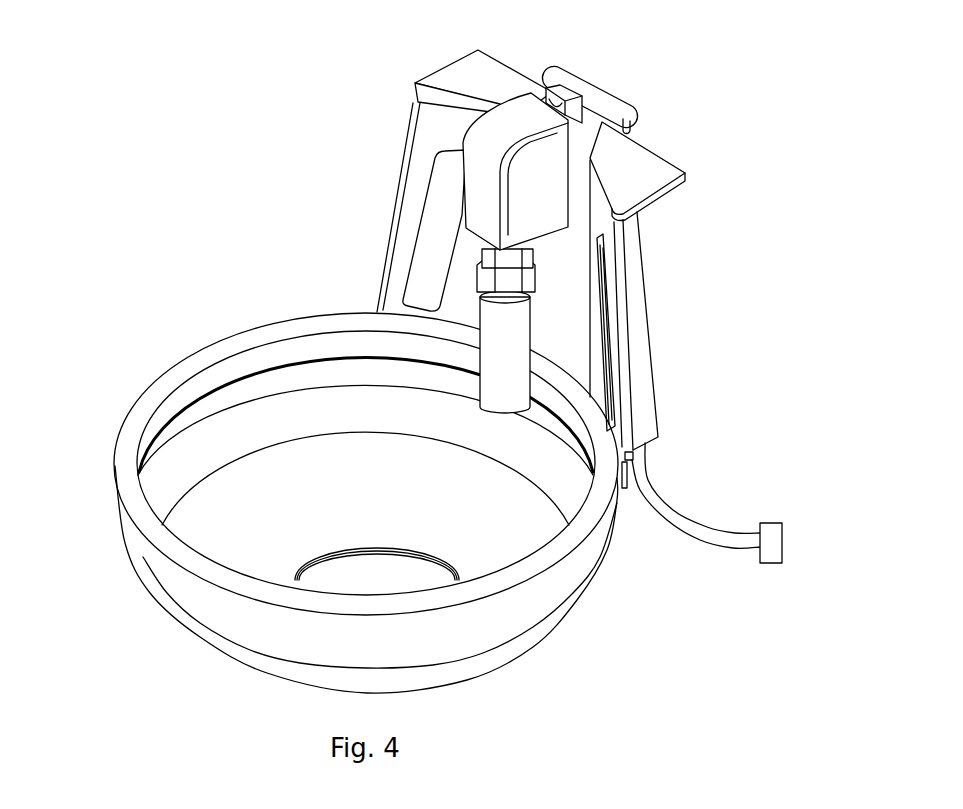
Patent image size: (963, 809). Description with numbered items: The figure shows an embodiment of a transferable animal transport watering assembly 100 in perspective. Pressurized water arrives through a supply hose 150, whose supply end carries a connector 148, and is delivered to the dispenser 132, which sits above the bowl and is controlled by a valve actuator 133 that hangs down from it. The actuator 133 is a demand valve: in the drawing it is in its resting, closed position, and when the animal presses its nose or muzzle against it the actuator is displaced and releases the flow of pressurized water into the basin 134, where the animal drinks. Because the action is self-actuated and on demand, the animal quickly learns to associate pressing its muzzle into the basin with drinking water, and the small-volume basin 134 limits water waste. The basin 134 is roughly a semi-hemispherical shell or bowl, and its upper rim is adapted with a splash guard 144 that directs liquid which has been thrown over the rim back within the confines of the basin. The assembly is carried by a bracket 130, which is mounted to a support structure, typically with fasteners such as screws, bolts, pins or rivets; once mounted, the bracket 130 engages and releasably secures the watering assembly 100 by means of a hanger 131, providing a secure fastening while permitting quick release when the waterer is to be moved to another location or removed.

The transferable animal transport watering assembly 100 is at (444, 352).
The bracket 130 is at (628, 135).
The hanger 131 is at (598, 98).
The dispenser 132 is at (485, 187).
The valve actuator 133 is at (505, 358).
The basin 134 is at (243, 625).
The splash guard 144 is at (128, 480).
The connector 148 is at (765, 518).
The supply hose 150 is at (717, 525).